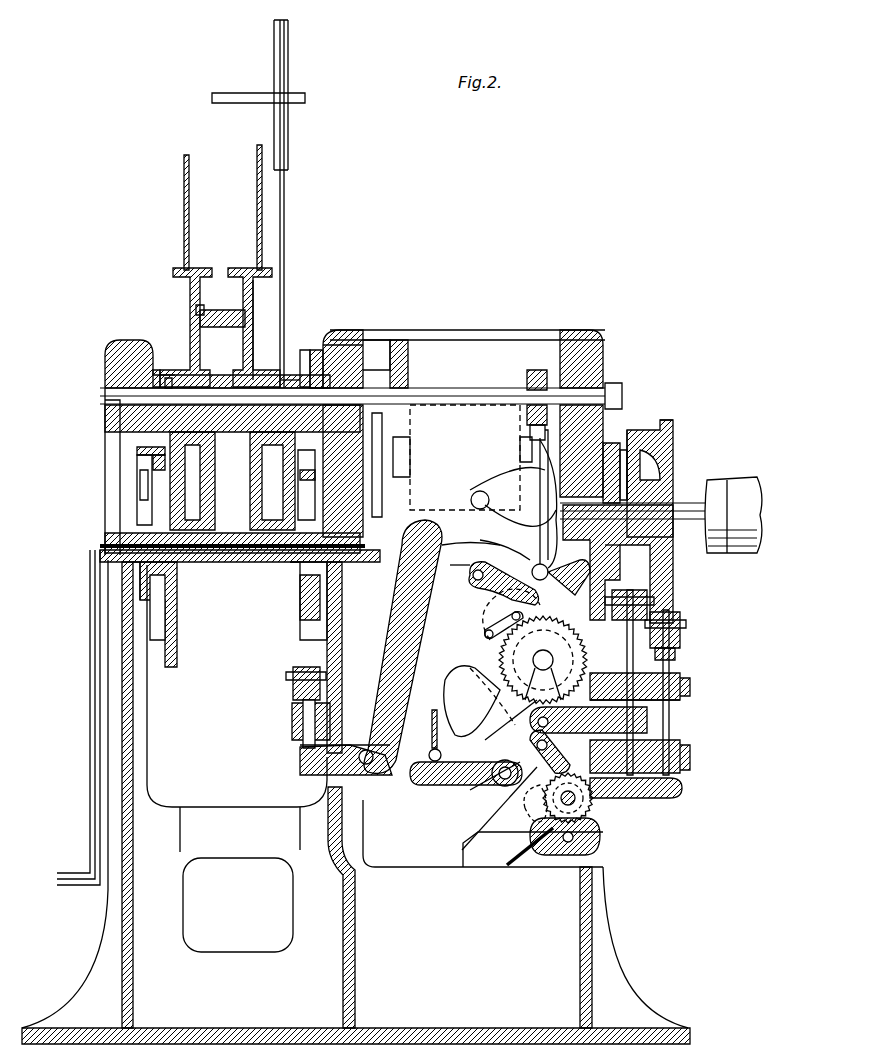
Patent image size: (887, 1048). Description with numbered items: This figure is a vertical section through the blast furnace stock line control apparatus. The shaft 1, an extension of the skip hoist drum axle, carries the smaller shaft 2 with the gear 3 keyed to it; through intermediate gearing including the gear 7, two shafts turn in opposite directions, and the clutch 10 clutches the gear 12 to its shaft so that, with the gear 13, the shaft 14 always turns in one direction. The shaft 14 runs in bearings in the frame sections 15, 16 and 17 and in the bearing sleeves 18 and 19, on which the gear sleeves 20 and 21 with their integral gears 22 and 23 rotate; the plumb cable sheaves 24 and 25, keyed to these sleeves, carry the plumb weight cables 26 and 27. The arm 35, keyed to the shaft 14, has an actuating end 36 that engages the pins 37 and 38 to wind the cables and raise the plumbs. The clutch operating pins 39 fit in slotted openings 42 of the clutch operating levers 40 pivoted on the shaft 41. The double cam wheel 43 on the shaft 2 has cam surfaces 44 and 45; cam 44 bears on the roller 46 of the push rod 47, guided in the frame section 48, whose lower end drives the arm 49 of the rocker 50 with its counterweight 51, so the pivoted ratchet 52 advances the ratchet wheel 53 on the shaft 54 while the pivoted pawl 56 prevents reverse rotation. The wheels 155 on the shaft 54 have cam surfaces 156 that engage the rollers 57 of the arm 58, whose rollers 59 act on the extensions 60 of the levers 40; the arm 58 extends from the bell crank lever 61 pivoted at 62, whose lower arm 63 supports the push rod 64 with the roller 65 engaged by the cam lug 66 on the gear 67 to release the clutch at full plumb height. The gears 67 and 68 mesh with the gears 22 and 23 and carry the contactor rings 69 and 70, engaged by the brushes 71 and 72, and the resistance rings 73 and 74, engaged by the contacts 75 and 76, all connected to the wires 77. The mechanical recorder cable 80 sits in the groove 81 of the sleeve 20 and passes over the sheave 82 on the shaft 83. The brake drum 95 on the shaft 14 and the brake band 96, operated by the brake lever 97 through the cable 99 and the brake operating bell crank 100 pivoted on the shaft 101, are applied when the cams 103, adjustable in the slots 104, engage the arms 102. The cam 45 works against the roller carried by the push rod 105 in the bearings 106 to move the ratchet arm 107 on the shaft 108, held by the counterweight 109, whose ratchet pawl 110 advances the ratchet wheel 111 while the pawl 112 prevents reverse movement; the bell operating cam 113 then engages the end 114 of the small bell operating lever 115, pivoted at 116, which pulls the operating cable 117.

The shaft 1 is at (722, 480).
The smaller shaft 2 is at (690, 503).
The gear 3 is at (623, 445).
The gear 7 is at (382, 497).
The clutch 10 is at (460, 405).
The gear 12 is at (410, 455).
The gear 13 is at (405, 340).
The shaft 14 is at (424, 388).
The frame section 15 is at (598, 335).
The frame section 16 is at (345, 330).
The frame section 17 is at (105, 347).
The bearing sleeve 18 is at (327, 335).
The bearing sleeve 19 is at (150, 368).
The gear sleeve 20 is at (313, 350).
The gear sleeve 21 is at (170, 378).
The integral gear 22 is at (300, 350).
The integral gear 23 is at (165, 370).
The plumb cable sheave 24 is at (260, 300).
The plumb cable sheave 25 is at (198, 268).
The plumb weight cable 26 is at (257, 192).
The plumb weight cable 27 is at (184, 167).
The arm 35 is at (278, 300).
The actuating end 36 is at (222, 310).
The pin 37 is at (246, 268).
The pin 38 is at (196, 308).
The operating pin 39 is at (520, 448).
The clutch operating lever 40 is at (490, 470).
The shaft 41 is at (471, 498).
The slotted opening 42 is at (480, 491).
The double cam wheel 43 is at (673, 445).
The cam surface 44 is at (645, 430).
The cam surface 45 is at (673, 420).
The roller 46 is at (660, 588).
The push rod 47 is at (636, 660).
The frame section 48 is at (676, 650).
The arm 49 is at (670, 718).
The rocker 50 is at (530, 740).
The counterweight 51 is at (455, 672).
The pivoted ratchet 52 is at (610, 733).
The ratchet wheel 53 is at (515, 690).
The shaft 54 is at (485, 740).
The pivoted pawl 56 is at (468, 566).
The roller 57 is at (495, 548).
The arm 58 is at (450, 545).
The roller 59 is at (522, 520).
The extension 60 is at (612, 443).
The bell crank lever 61 is at (395, 600).
The pivot 62 is at (372, 775).
The lower arm 63 is at (300, 752).
The push rod 64 is at (292, 720).
The roller 65 is at (293, 668).
The cam lug 66 is at (372, 350).
The gear 67 is at (300, 620).
The gear 68 is at (165, 655).
The contactor ring 69 is at (257, 562).
The contactor ring 70 is at (195, 562).
The contactor brush 71 is at (320, 498).
The contactor brush 72 is at (140, 490).
The resistance ring 73 is at (262, 478).
The resistance ring 74 is at (137, 450).
The contact 75 is at (320, 480).
The contact 76 is at (153, 462).
The wires 77 is at (88, 665).
The cable 80 is at (286, 176).
The circumferential groove 81 is at (250, 449).
The sheave 82 is at (290, 82).
The shaft 83 is at (226, 93).
The brake drum 95 is at (527, 378).
The brake band 96 is at (537, 370).
The brake lever 97 is at (530, 430).
The cable 99 is at (530, 470).
The brake operating bell crank 100 is at (548, 570).
The shaft 101 is at (640, 560).
The arms 102 is at (640, 575).
The cam 103 is at (490, 600).
The slots 104 is at (680, 615).
The push rod 105 is at (680, 705).
The bearings 106 is at (690, 683).
The ratchet arm 107 is at (682, 790).
The shaft 108 is at (580, 805).
The counterweight 109 is at (480, 860).
The ratchet pawl 110 is at (590, 850).
The ratchet wheel 111 is at (585, 818).
The pawl 112 is at (470, 790).
The bell operating cam 113 is at (540, 840).
The end 114 is at (482, 830).
The small bell operating lever 115 is at (445, 785).
The pivot 116 is at (497, 785).
The operating cable 117 is at (432, 725).
The wheels 155 is at (485, 632).
The cam surface 156 is at (470, 578).